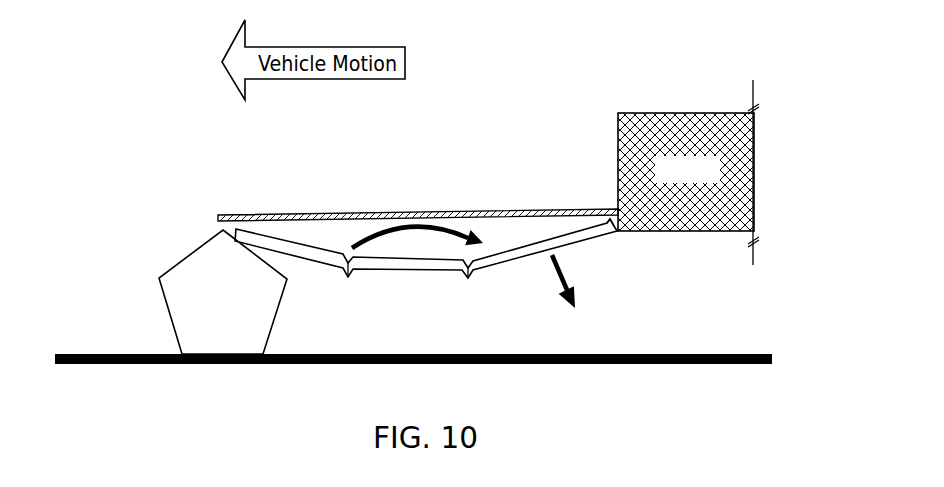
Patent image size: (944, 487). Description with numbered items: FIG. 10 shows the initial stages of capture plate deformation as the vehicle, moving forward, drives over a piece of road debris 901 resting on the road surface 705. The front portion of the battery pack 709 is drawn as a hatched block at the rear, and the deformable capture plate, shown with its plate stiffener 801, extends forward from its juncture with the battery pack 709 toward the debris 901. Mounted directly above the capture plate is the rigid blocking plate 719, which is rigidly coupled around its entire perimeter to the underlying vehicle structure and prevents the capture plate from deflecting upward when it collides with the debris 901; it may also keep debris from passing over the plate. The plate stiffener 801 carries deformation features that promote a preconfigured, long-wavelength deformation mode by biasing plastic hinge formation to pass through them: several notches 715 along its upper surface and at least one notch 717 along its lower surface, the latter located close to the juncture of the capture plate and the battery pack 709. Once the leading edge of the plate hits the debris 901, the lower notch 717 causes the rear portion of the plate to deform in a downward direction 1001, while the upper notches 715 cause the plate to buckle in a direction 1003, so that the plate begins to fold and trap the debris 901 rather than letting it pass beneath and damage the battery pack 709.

The road surface 705 is at (703, 346).
The battery pack 709 is at (705, 181).
The notches 715 is at (347, 246).
The notch 717 is at (612, 241).
The blocking plate 719 is at (349, 213).
The plate stiffener 801 is at (397, 271).
The road debris 901 is at (241, 315).
The downward direction 1001 is at (557, 278).
The buckling direction 1003 is at (408, 226).